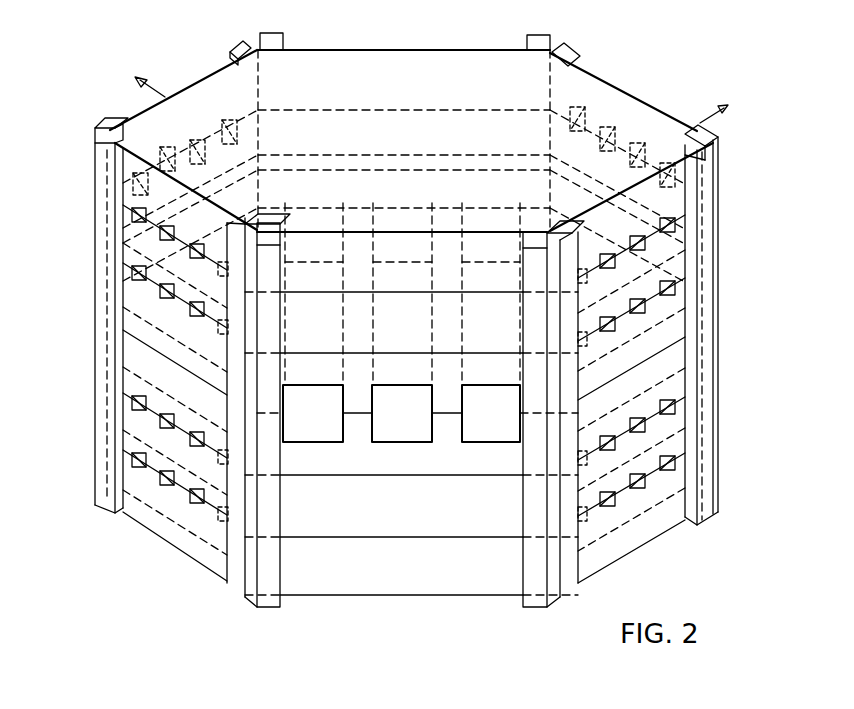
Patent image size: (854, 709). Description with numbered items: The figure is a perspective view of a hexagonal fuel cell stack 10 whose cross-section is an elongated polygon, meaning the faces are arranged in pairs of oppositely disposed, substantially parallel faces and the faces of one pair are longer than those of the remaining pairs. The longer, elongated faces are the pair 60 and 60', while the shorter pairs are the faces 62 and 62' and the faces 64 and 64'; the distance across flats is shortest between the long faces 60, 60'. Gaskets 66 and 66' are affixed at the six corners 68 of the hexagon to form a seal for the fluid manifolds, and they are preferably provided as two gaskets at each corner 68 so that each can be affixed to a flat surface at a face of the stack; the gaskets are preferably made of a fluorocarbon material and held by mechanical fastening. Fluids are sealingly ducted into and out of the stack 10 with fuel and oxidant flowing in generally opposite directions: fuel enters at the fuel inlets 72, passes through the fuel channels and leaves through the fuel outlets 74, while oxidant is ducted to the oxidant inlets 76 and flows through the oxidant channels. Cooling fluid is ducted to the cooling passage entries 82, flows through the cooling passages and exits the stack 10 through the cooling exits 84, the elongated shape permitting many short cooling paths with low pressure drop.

The fuel cell stack 10 is at (742, 405).
The elongated face 60 is at (411, 431).
The elongated face 60' is at (404, 121).
The face 62 is at (155, 363).
The face 62' is at (639, 162).
The face 64 is at (649, 363).
The face 64' is at (184, 160).
The gasket 66 is at (182, 384).
The gasket 66' is at (522, 419).
The corner 68 is at (107, 122).
The fuel inlet 72 is at (195, 316).
The fuel outlet 74 is at (160, 150).
The oxidant inlet 76 is at (638, 268).
The cooling passage entry 82 is at (410, 443).
The cooling exit 84 is at (325, 207).